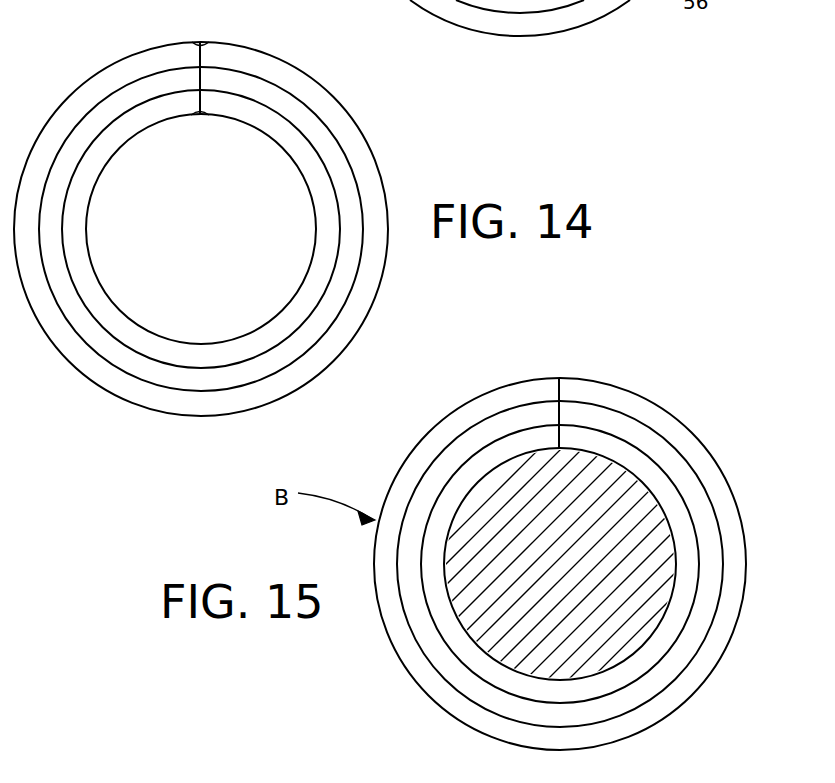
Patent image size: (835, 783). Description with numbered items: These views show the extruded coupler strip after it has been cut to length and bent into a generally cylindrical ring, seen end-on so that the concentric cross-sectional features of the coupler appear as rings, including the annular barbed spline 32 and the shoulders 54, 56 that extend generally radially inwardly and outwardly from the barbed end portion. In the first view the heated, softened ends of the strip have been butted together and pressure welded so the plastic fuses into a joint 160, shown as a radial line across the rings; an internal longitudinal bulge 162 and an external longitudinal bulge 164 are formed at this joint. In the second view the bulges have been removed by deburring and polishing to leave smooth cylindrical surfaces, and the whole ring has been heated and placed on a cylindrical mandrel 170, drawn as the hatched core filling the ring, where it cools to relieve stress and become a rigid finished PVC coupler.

In FIG. 14, the annular barbed spline 32 is at (343, 288).
In FIG. 15, the annular barbed spline 32 is at (702, 622).
In FIG. 14, the shoulder 56 is at (340, 338).
In FIG. 15, the shoulder 56 is at (698, 673).
In FIG. 14, the shoulder 54 is at (293, 312).
In FIG. 15, the shoulder 54 is at (633, 668).
In FIG. 14, the joint 160 is at (195, 72).
In FIG. 15, the joint 160 is at (558, 412).
In FIG. 14, the internal longitudinal bulge 162 is at (204, 117).
In FIG. 14, the external longitudinal bulge 164 is at (205, 40).
In FIG. 15, the cylindrical mandrel 170 is at (467, 613).